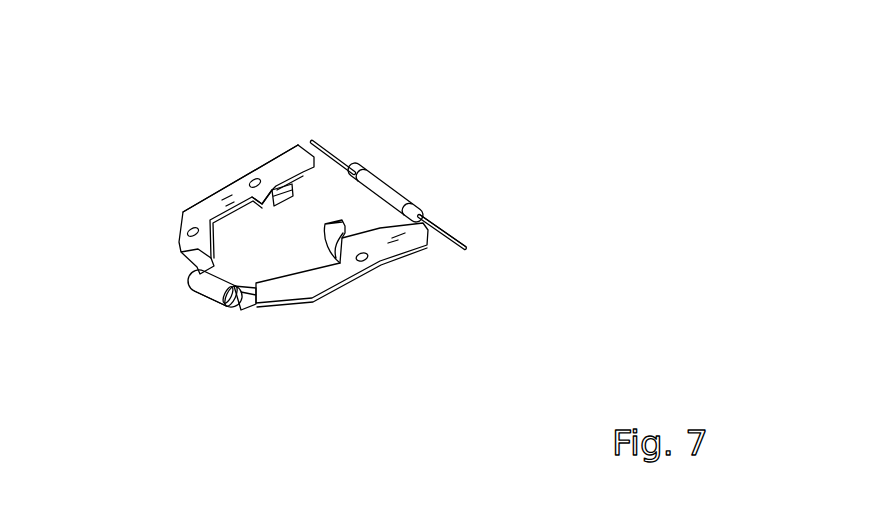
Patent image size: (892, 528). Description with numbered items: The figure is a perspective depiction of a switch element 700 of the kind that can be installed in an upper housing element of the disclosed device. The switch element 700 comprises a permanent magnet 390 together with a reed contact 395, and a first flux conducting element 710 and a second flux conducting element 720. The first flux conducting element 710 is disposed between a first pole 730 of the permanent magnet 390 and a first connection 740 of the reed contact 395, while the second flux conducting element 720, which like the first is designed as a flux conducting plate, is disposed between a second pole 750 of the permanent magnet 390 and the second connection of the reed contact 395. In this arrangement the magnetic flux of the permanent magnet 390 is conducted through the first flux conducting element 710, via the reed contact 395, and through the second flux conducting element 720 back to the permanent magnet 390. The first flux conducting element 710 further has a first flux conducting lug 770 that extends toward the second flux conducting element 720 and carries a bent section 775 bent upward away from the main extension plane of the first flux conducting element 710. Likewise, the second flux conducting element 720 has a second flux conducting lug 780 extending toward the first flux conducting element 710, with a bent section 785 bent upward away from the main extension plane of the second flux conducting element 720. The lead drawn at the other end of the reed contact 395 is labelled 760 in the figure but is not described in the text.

The switch element 700 is at (280, 138).
The second flux conducting element 720 is at (205, 183).
The fuse lead wire 760 is at (333, 150).
The reed contact 395 is at (385, 184).
The first flux conducting lug 770 is at (402, 215).
The first connection 740 is at (440, 223).
The second pole 750 is at (202, 285).
The permanent magnet 390 is at (209, 301).
The first pole 730 is at (233, 310).
The second flux conducting lug 780 is at (265, 202).
The bent section 785 is at (287, 200).
The bent section 775 is at (340, 238).
The first flux conducting element 710 is at (402, 264).